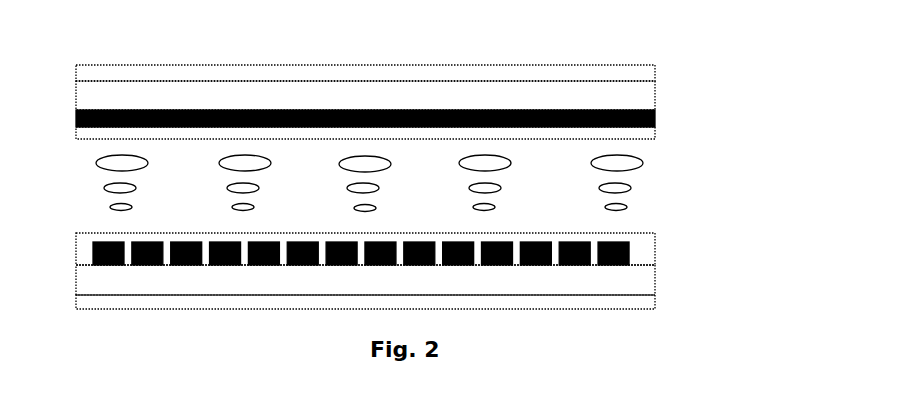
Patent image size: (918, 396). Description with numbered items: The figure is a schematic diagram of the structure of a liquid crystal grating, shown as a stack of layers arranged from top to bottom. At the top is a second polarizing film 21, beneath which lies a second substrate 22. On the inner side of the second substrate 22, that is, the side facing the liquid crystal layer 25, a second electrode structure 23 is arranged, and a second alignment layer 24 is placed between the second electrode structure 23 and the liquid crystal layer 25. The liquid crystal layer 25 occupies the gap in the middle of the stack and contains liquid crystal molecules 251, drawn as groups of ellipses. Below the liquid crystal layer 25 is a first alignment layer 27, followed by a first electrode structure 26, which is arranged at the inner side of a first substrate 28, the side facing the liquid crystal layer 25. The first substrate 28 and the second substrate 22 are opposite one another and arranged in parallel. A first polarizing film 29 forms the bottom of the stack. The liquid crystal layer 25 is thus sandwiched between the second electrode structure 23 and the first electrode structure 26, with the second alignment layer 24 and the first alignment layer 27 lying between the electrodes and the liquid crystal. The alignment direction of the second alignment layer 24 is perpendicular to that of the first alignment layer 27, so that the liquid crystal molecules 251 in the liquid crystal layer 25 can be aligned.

The second polarizing film 21 is at (647, 75).
The second substrate 22 is at (643, 95).
The second electrode structure 23 is at (657, 118).
The second alignment layer 24 is at (650, 132).
The liquid crystal layer 25 is at (388, 183).
The liquid crystal molecules 251 is at (123, 163).
The first electrode structure 26 is at (628, 249).
The first alignment layer 27 is at (640, 259).
The first substrate 28 is at (638, 282).
The first polarizing film 29 is at (643, 303).